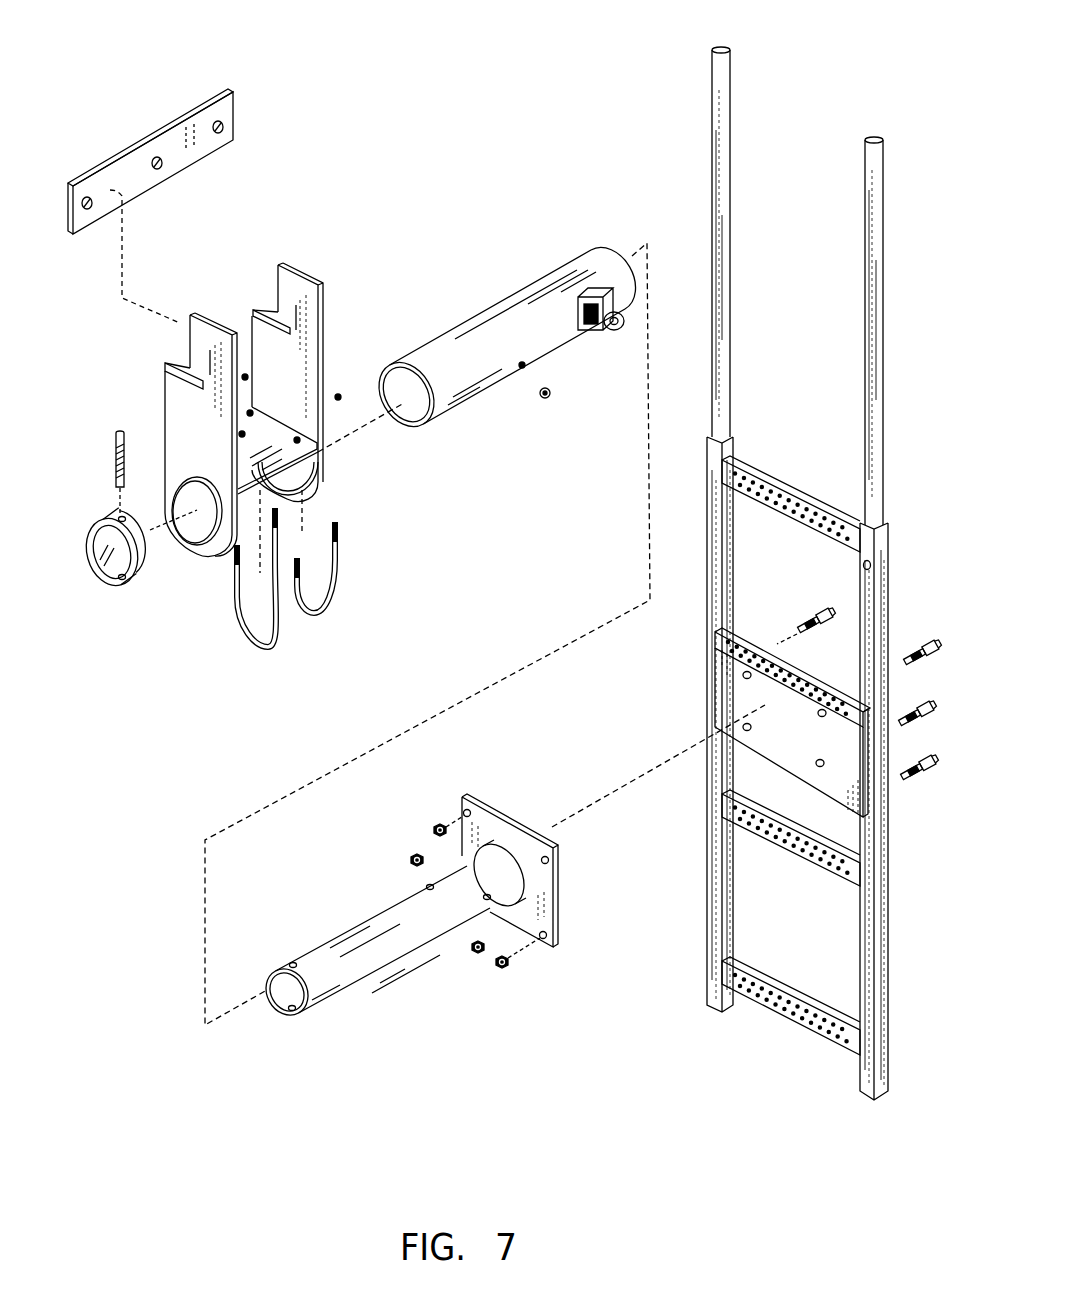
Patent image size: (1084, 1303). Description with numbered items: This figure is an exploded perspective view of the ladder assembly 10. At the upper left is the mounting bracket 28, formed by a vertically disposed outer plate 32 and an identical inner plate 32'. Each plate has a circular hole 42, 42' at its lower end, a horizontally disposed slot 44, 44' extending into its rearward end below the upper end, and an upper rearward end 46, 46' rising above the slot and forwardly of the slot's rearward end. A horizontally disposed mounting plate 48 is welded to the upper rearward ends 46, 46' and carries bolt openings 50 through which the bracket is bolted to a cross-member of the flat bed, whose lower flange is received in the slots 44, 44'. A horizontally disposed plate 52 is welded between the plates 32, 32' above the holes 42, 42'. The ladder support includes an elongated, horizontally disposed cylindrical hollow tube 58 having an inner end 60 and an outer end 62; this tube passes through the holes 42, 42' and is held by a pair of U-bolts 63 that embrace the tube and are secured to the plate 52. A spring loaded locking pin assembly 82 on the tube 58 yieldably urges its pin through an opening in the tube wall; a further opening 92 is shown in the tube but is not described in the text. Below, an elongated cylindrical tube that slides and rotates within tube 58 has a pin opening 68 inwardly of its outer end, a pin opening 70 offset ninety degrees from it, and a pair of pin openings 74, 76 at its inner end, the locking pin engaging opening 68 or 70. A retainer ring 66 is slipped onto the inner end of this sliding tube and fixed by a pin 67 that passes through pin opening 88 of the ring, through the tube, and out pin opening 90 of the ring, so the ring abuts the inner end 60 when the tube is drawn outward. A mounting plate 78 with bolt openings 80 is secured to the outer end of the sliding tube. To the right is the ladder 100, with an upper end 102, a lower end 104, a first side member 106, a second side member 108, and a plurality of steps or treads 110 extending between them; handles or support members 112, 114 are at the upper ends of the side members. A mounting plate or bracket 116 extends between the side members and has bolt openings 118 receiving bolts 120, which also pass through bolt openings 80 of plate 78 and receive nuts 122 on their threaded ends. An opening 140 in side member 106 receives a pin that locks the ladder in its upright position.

The ladder assembly 10 is at (437, 193).
The mounting bracket 28 is at (333, 253).
The outer plate 32 is at (305, 338).
The inner plate 32' is at (154, 436).
The circular hole 42 is at (328, 494).
The circular hole 42' is at (181, 550).
The slot 44 is at (251, 271).
The slot 44' is at (137, 351).
The upper rearward end 46 is at (271, 230).
The upper rearward end 46' is at (130, 308).
The mounting plate 48 is at (158, 127).
The bolt openings 50 is at (218, 118).
The horizontally disposed plate 52 is at (314, 446).
The cylindrical hollow tube 58 is at (519, 288).
The inner end 60 is at (395, 363).
The outer end 62 is at (620, 249).
The U-bolts 63 is at (260, 647).
The retainer ring 66 is at (90, 527).
The pin 67 is at (118, 440).
The pin opening 68 is at (487, 898).
The pin opening 70 is at (428, 887).
The pin opening 74 is at (293, 963).
The pin opening 76 is at (292, 1010).
The mounting plate 78 is at (525, 813).
The bolt openings 80 is at (557, 857).
The spring loaded locking pin assembly 82 is at (616, 344).
The pin opening 88 is at (93, 553).
The pin opening 90 is at (121, 583).
The hole in receiver tube 92 is at (545, 400).
The ladder 100 is at (907, 553).
The upper end 102 is at (798, 140).
The lower end 104 is at (868, 1117).
The first side member 106 is at (885, 952).
The second side member 108 is at (700, 868).
The steps or treads 110 is at (785, 992).
The handle or support member 112 is at (883, 350).
The handle or support member 114 is at (728, 350).
The mounting plate or bracket 116 is at (738, 692).
The bolt openings 118 is at (822, 770).
The bolts 120 is at (933, 703).
The nuts 122 is at (502, 967).
The opening 140 is at (862, 565).